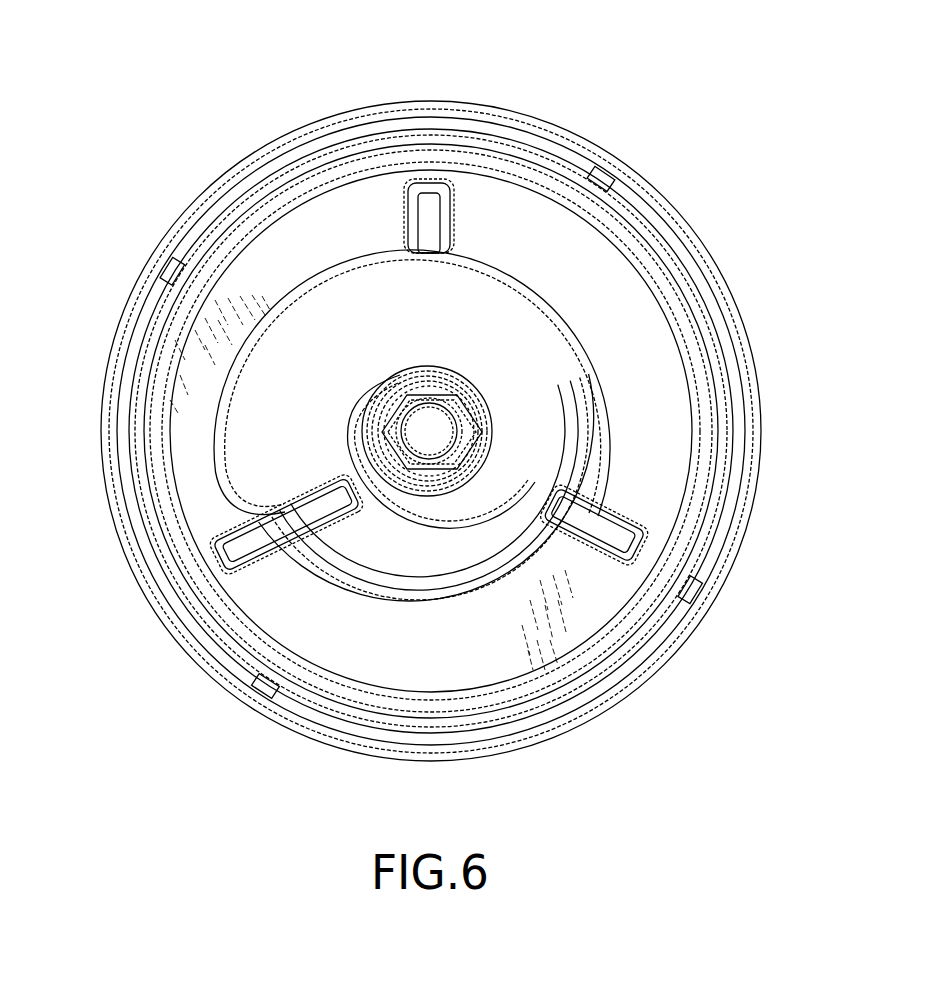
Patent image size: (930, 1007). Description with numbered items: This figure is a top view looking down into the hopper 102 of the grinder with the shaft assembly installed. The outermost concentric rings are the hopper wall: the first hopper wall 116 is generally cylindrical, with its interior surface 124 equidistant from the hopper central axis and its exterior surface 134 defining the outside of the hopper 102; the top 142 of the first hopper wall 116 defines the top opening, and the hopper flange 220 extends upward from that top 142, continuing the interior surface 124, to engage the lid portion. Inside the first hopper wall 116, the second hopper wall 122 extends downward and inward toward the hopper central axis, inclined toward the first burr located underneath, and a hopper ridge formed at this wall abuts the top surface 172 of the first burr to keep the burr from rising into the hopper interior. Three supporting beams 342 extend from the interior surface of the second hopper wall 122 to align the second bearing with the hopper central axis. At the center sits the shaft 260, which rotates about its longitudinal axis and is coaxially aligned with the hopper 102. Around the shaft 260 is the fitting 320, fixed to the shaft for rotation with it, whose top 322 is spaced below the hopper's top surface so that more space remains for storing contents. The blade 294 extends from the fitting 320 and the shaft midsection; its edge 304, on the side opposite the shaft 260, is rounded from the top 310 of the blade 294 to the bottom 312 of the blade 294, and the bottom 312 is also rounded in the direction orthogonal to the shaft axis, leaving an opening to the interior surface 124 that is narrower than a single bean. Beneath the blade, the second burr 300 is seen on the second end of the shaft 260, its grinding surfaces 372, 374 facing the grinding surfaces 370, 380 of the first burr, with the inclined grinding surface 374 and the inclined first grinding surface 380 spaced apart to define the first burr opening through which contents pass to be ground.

The hopper 102 is at (240, 92).
The top of the first hopper wall 142 is at (337, 130).
The exterior surface of the first hopper wall 134 is at (210, 187).
The first hopper wall 116 is at (193, 222).
The interior surface of the first hopper wall 124 is at (248, 215).
The hopper flange 220 is at (620, 215).
The second hopper wall 122 is at (283, 615).
The blade 294 is at (293, 393).
The top of the blade 310 is at (368, 461).
The bottom of the blade 312 is at (267, 473).
The grinding surface of the first burr 370 is at (436, 585).
The first grinding surface of the first burr 380 is at (435, 587).
The second burr 300 is at (400, 603).
The grinding surface of the second burr 372 is at (428, 601).
The grinding surface of the second burr 374 is at (372, 543).
The supporting beam 342 is at (433, 217).
The top of the fitting 322 is at (445, 380).
The fitting 320 is at (465, 398).
The shaft 260 is at (435, 432).
The edge of the blade 304 is at (255, 343).
The top surface of the first burr 172 is at (532, 568).